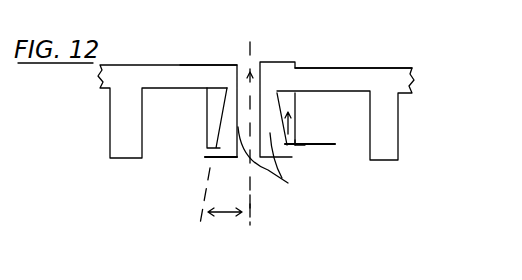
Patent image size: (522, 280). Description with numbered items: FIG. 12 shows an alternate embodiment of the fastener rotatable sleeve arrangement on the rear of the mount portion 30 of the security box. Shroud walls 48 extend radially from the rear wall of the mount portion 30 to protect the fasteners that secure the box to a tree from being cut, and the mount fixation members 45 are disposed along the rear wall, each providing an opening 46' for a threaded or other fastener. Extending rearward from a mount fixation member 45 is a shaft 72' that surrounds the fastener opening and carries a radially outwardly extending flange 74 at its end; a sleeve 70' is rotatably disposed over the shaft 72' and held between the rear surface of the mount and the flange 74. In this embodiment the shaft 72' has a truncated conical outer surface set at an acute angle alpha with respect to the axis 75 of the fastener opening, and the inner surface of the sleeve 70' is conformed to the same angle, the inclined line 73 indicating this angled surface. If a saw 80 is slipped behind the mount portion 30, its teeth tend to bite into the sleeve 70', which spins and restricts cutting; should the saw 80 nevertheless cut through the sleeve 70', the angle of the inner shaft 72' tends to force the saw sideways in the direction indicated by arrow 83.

The shroud walls 48 is at (120, 128).
The mount fixation members 45 is at (222, 76).
The gap between panels 46' is at (241, 121).
The mount portion 30 is at (317, 75).
The sleeve 70' is at (191, 121).
The shaft 72' is at (280, 145).
The flange 74 is at (205, 157).
The arrow 83 is at (292, 129).
The saw 80 is at (312, 134).
The center line 75 is at (253, 200).
The tilted axis 73 is at (224, 208).